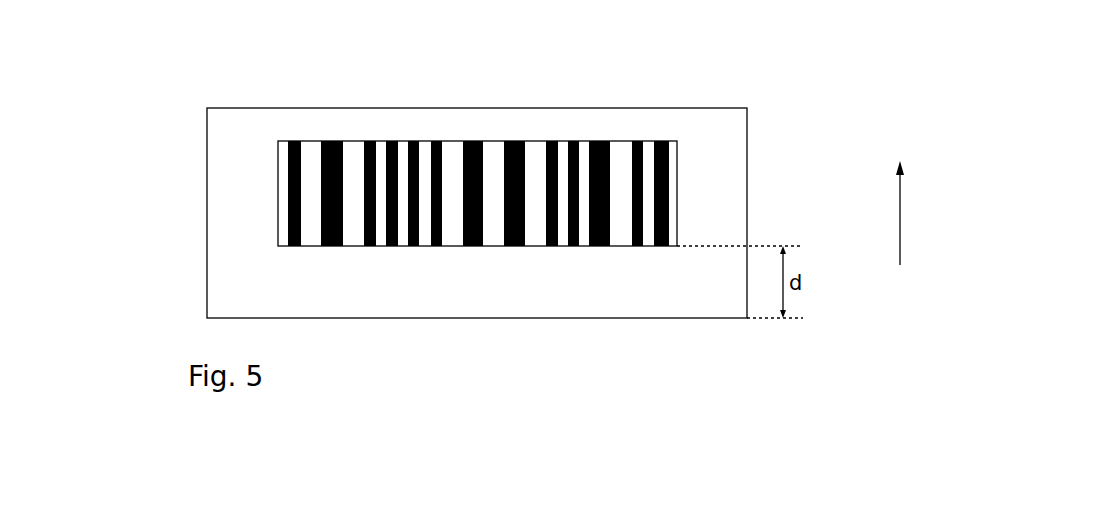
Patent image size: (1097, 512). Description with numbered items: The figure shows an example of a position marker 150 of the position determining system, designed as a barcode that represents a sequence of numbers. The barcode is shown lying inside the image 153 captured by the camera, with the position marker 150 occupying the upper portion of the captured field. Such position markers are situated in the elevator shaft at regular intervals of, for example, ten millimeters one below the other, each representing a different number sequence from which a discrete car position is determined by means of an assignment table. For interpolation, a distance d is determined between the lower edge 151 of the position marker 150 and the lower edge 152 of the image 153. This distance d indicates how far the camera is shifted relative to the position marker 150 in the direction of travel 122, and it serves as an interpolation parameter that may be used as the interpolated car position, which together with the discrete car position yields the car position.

The image 153 is at (207, 108).
The position marker 150 is at (670, 140).
The lower edge of the position marker 151 is at (803, 246).
The lower edge of the image 152 is at (803, 318).
The direction of travel 122 is at (924, 213).